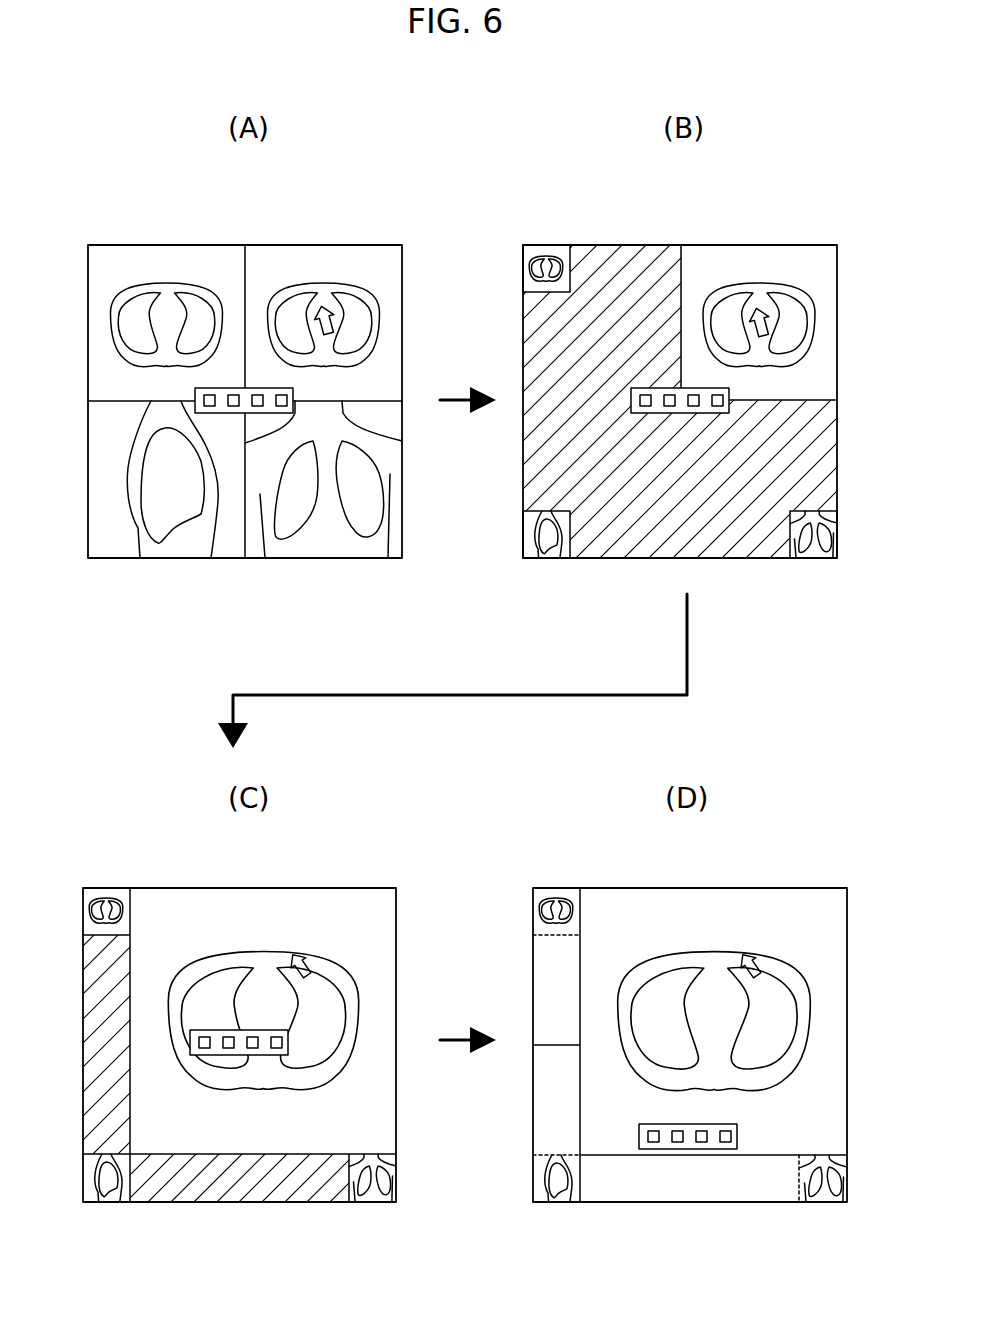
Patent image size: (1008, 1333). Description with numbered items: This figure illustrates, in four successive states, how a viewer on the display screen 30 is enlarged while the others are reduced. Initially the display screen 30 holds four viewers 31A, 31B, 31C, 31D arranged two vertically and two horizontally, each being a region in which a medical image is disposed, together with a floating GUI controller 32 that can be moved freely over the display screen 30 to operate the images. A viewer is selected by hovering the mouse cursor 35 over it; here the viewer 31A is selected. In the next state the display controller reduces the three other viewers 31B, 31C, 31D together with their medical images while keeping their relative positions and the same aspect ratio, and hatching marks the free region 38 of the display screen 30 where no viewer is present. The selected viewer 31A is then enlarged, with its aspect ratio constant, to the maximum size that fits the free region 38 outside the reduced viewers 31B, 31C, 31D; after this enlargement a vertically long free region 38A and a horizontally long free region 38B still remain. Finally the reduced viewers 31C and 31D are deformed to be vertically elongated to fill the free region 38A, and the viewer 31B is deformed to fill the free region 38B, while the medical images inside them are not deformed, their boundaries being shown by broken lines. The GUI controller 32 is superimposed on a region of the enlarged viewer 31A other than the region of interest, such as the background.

The display screen 30 is at (380, 242).
The viewer 31A is at (320, 258).
The viewer 31B is at (325, 553).
The viewer 31C is at (167, 553).
The viewer 31D is at (160, 258).
The GUI controller 32 is at (295, 392).
The mouse cursor 35 is at (348, 322).
The free region 38 is at (836, 440).
The free region 38A is at (86, 1062).
The free region 38B is at (252, 1202).